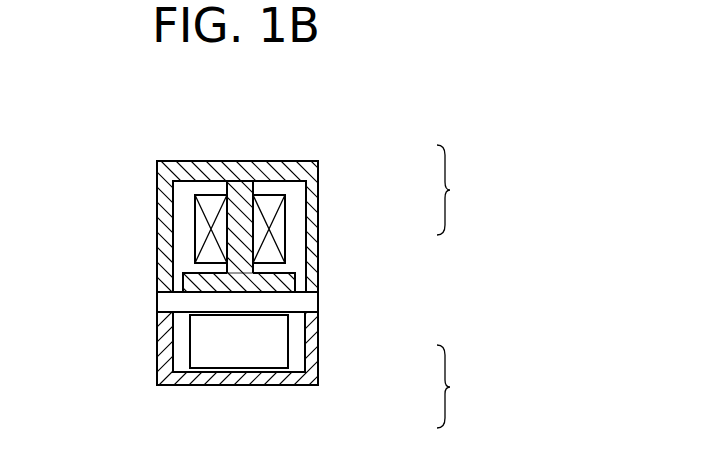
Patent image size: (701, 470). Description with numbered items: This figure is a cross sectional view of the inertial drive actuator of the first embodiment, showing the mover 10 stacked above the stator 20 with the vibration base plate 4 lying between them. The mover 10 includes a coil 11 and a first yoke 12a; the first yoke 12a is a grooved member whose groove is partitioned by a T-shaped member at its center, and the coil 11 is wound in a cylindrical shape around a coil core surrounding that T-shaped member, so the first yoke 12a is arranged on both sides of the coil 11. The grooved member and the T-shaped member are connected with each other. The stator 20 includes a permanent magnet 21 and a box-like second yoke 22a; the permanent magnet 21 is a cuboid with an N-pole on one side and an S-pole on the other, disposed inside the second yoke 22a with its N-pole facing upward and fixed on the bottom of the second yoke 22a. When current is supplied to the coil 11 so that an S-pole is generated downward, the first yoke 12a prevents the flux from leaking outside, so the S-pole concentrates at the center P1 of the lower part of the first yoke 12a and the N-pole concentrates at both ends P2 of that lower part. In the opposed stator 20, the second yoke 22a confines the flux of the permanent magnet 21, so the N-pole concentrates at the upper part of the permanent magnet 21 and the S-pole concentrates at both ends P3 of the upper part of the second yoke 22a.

The first yoke 12a is at (312, 178).
The coil 11 is at (275, 228).
The vibration base plate 4 is at (303, 302).
The second yoke 22a is at (310, 376).
The permanent magnet 21 is at (278, 330).
The center of the lower part of the first yoke P1 is at (241, 270).
The both ends of the lower part of the first yoke P2 is at (172, 282).
The both ends of the upper part of the second yoke P3 is at (178, 322).
The mover 10 is at (463, 190).
The stator 20 is at (463, 386).